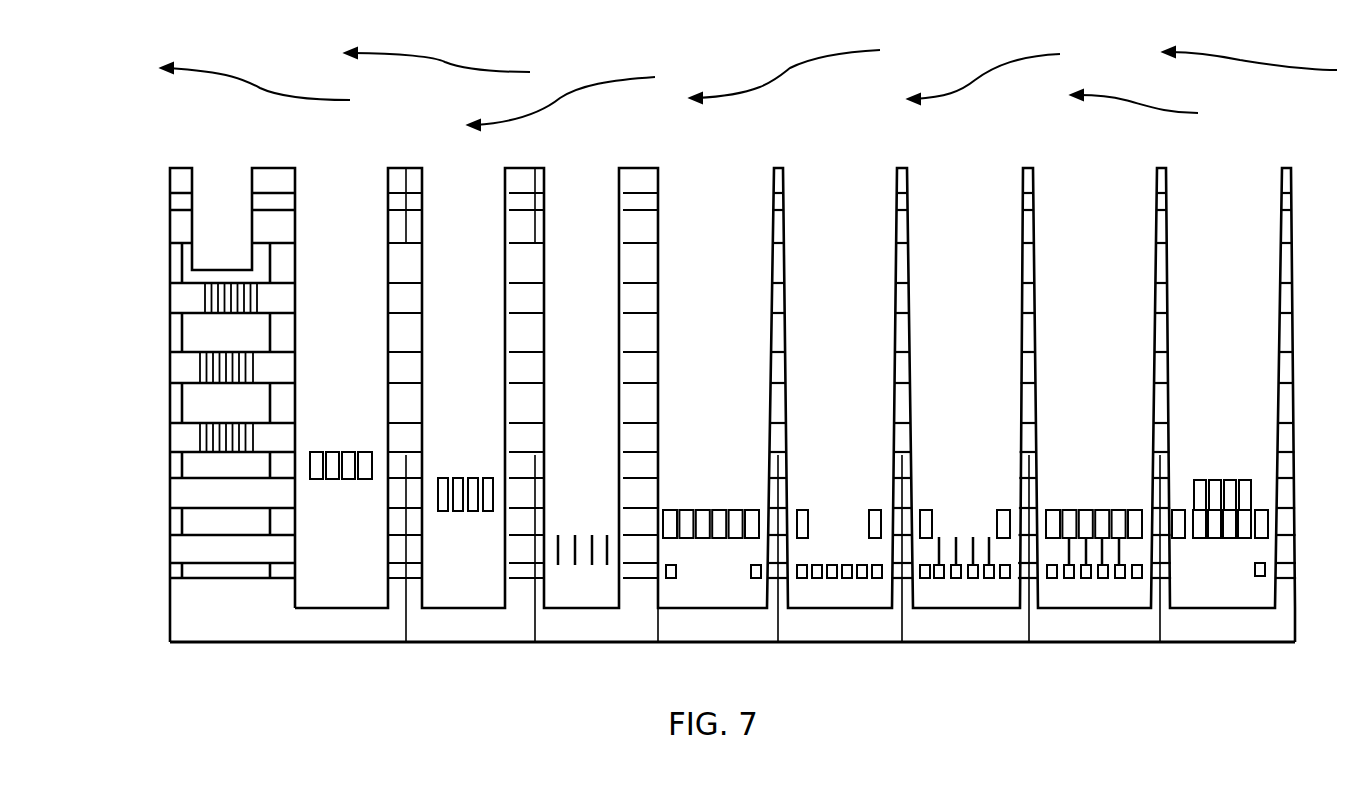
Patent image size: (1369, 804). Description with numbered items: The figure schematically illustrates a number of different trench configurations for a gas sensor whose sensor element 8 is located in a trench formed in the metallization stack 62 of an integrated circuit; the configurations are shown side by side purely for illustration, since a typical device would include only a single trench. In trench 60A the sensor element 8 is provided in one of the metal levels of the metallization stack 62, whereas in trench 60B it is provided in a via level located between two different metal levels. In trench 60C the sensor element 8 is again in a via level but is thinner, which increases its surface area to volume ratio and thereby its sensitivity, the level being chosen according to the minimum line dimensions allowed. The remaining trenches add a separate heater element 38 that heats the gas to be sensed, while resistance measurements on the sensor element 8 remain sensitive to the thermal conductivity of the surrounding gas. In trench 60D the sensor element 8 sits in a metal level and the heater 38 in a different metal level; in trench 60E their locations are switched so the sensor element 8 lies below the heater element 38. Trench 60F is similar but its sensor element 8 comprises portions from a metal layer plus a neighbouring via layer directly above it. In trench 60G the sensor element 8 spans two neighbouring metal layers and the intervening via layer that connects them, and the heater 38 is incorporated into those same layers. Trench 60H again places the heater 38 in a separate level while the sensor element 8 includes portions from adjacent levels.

The sensor element 8 is at (335, 451).
The heater element 38 is at (749, 572).
The metallization stack 62 is at (160, 243).
The trench 60A is at (344, 268).
The trench 60B is at (467, 268).
The trench 60C is at (592, 268).
The trench 60D is at (722, 268).
The trench 60E is at (847, 268).
The trench 60F is at (971, 268).
The trench 60G is at (1098, 268).
The trench 60H is at (1223, 268).